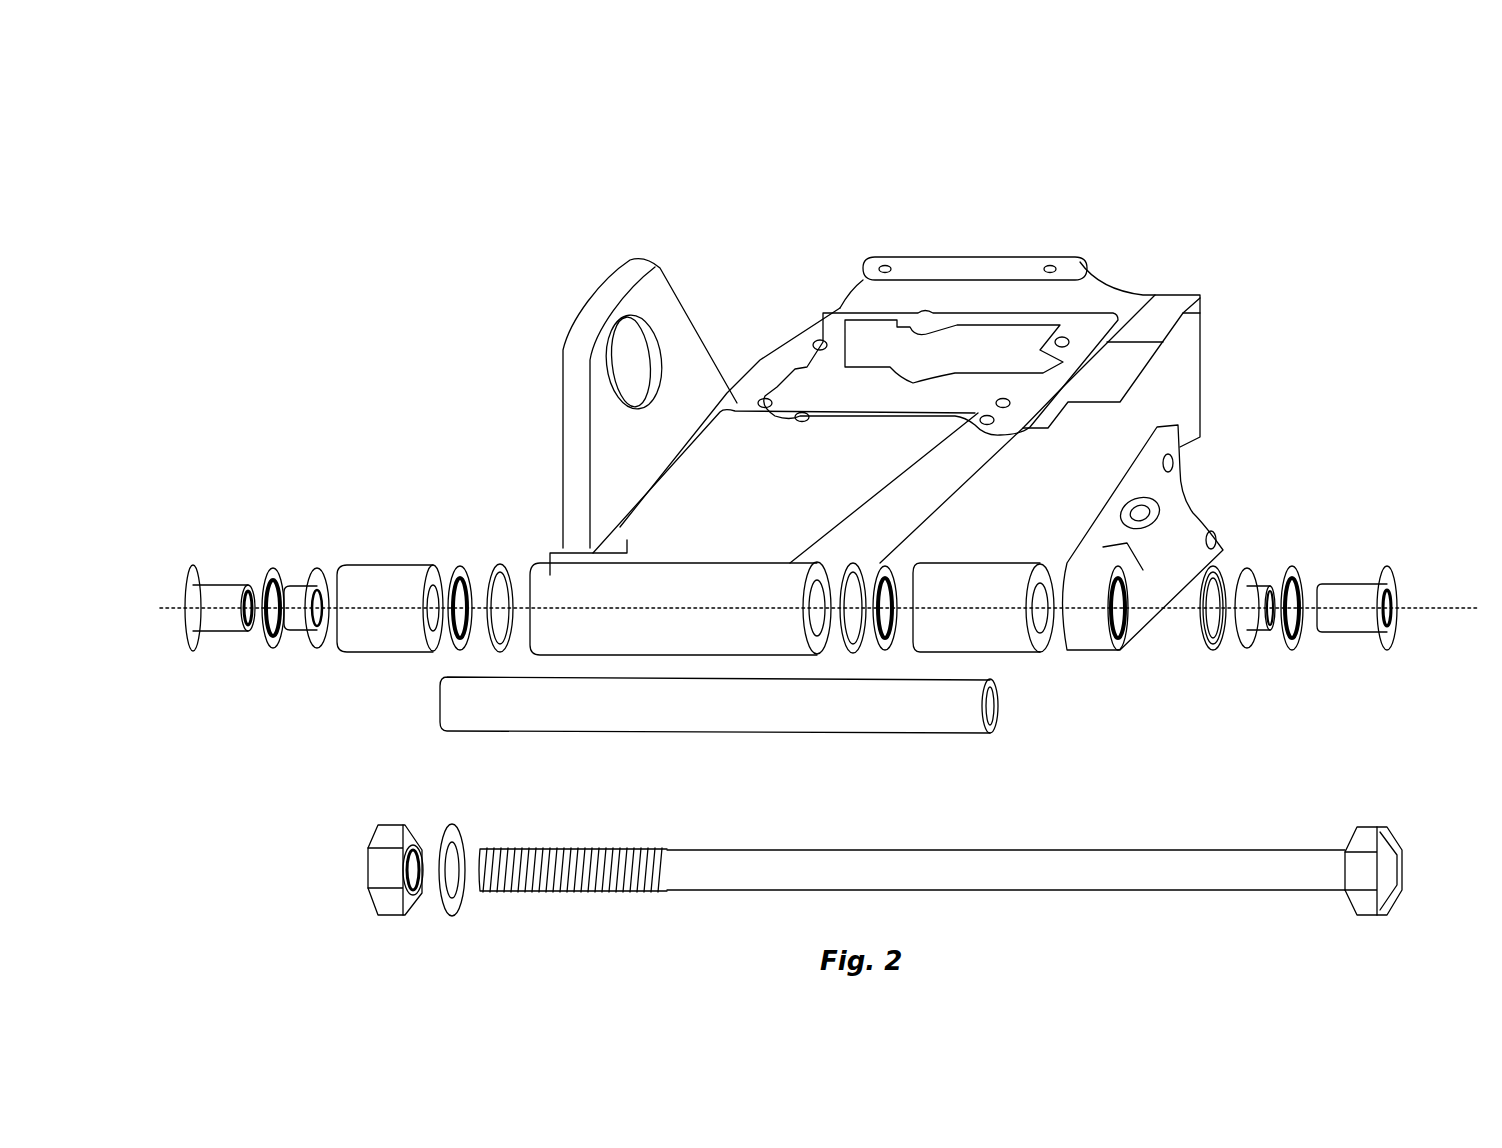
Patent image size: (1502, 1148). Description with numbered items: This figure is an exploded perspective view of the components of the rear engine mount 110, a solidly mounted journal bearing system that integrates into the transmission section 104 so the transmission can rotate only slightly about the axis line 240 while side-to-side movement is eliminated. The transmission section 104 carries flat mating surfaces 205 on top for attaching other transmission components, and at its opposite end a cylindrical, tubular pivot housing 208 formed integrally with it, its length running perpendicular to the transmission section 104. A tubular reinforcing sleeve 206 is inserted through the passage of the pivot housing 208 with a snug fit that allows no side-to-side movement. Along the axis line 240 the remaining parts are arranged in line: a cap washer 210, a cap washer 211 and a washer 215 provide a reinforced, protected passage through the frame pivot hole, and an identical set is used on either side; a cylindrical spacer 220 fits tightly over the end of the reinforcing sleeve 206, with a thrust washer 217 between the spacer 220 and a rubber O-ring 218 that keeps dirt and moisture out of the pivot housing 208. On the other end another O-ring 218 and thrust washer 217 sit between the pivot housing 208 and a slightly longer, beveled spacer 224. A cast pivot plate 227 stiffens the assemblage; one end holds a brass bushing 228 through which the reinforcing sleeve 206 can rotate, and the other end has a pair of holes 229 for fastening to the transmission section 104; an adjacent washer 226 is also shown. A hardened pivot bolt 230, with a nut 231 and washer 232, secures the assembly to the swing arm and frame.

The rear engine mount 110 is at (757, 272).
The transmission section 104 is at (1113, 290).
The surfaces 205 is at (817, 312).
The pivot housing 208 is at (678, 563).
The cap washer 210 is at (219, 587).
The cap washer 211 is at (317, 567).
The washer 215 is at (276, 650).
The thrust washer 217 is at (460, 567).
The rubber O-ring 218 is at (500, 567).
The spacer 220 is at (381, 652).
The spacer 224 is at (1013, 652).
The washer 226 is at (1214, 648).
The pivot plate 227 is at (1222, 540).
The brass bushing 228 is at (1090, 632).
The holes 229 is at (1180, 463).
The axis line 240 is at (707, 610).
The reinforcing sleeve 206 is at (730, 733).
The pivot bolt 230 is at (1080, 852).
The nut 231 is at (370, 867).
The washer 232 is at (450, 827).